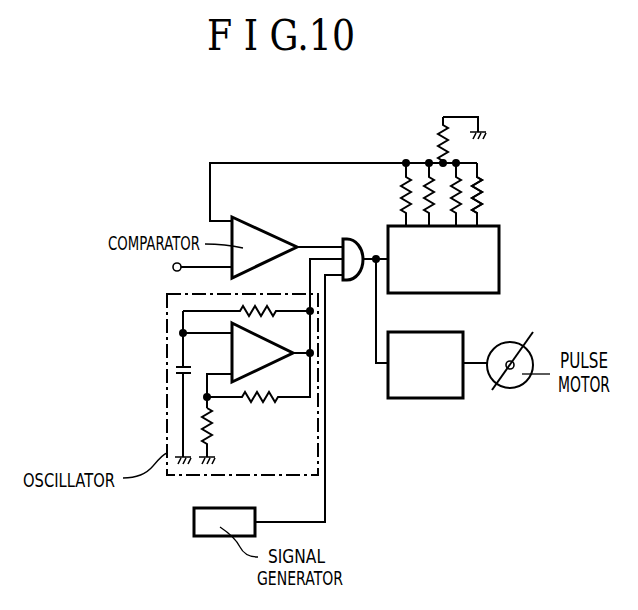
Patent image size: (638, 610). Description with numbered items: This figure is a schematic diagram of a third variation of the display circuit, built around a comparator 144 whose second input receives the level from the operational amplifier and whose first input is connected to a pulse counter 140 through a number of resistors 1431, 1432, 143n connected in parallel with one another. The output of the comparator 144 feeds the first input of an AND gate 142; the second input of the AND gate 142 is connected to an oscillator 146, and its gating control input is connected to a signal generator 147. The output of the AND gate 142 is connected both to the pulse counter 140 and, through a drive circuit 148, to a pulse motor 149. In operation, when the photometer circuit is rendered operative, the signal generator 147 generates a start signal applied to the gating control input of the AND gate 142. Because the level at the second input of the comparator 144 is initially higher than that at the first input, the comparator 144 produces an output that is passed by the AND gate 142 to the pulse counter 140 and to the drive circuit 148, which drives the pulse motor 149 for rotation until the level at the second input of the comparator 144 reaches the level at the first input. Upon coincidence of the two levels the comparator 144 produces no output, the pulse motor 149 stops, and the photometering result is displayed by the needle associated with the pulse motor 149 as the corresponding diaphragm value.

The pulse counter 140 is at (487, 274).
The AND gate 142 is at (352, 250).
The resistor 1431 is at (402, 200).
The resistor 1432 is at (423, 190).
The resistor 143n is at (482, 195).
The comparator 144 is at (263, 238).
The oscillator 146 is at (167, 410).
The signal generator 147 is at (194, 522).
The drive circuit 148 is at (423, 390).
The pulse motor 149 is at (508, 385).